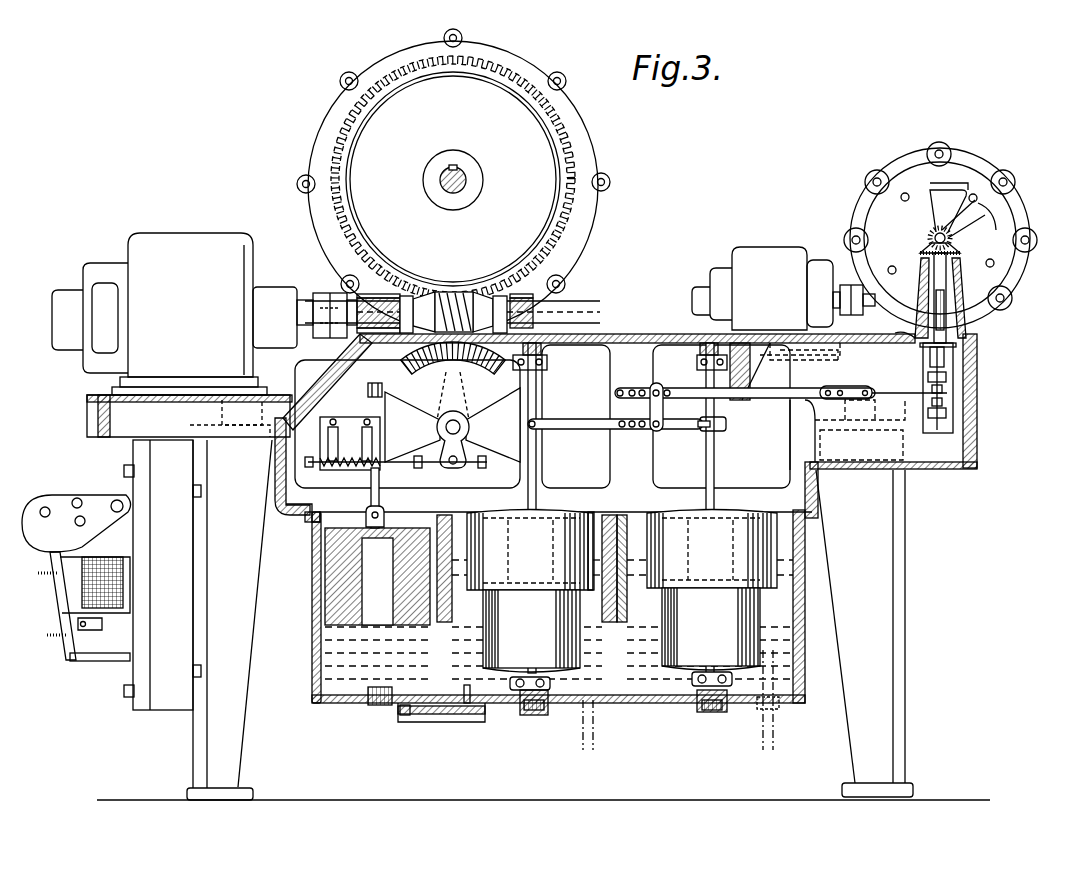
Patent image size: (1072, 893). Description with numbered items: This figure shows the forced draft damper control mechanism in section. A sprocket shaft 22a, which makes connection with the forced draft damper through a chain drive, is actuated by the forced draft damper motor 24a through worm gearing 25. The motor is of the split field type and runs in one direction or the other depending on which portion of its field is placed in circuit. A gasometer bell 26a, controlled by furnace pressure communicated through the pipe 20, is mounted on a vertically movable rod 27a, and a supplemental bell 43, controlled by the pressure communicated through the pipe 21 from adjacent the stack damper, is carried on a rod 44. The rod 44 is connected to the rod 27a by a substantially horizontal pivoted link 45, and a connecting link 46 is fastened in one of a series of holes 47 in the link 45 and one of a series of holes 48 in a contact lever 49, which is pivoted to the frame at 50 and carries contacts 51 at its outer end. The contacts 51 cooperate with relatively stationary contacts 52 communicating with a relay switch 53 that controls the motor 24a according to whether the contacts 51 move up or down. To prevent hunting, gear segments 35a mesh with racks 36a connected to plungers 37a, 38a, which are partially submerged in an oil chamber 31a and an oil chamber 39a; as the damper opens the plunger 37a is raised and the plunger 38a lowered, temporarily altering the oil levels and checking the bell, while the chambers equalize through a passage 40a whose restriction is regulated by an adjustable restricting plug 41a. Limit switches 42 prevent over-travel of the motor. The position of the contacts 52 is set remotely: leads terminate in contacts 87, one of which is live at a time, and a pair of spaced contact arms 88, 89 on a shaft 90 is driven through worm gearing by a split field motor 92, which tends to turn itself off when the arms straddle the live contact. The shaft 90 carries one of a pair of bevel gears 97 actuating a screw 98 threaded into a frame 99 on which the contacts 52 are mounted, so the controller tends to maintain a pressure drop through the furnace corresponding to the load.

The pipe 20 is at (594, 733).
The pipe 21 is at (775, 727).
The sprocket shaft 22a is at (467, 179).
The forced draft damper motor 24a is at (182, 314).
The worm gearing 25 is at (452, 290).
The gasometer bell 26a is at (572, 540).
The vertically movable rod 27a is at (537, 462).
The oil chamber 31a is at (572, 690).
The gear segments 35a is at (453, 428).
The racks 36a is at (418, 380).
The plunger 37a is at (598, 540).
The plunger 38a is at (325, 585).
The oil chamber 39a is at (340, 658).
The passage 40a is at (450, 712).
The adjustable restricting plug 41a is at (380, 705).
The limit switches 42 is at (396, 443).
The supplemental bell 43 is at (765, 548).
The rod 44 is at (714, 468).
The pivoted link 45 is at (583, 428).
The connecting link 46 is at (664, 414).
The series of holes 47 is at (642, 428).
The series of holes 48 is at (644, 388).
The contact lever 49 is at (672, 378).
The pivot 50 is at (743, 400).
The contacts 51 is at (933, 386).
The relatively stationary contacts 52 is at (946, 377).
The relay switch 53 is at (75, 478).
The contacts 87 is at (975, 196).
The contact arm 88 is at (948, 188).
The contact arm 89 is at (990, 212).
The shaft 90 is at (932, 232).
The split field motor 92 is at (783, 288).
The bevel gears 97 is at (922, 247).
The screw 98 is at (934, 292).
The frame 99 is at (955, 355).